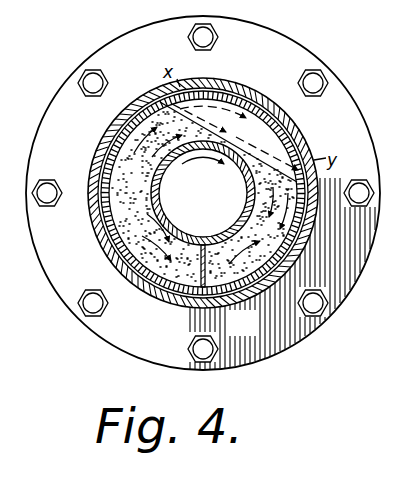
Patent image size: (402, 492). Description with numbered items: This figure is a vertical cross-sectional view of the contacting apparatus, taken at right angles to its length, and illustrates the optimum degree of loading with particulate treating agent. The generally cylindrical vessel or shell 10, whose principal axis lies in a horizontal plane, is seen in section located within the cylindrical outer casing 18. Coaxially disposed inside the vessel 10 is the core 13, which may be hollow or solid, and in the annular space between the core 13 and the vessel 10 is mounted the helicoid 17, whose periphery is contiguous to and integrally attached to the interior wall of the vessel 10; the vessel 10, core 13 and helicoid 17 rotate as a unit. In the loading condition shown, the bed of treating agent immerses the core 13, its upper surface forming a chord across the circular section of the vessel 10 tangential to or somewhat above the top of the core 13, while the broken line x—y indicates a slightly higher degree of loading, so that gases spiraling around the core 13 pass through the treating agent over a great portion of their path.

The vessel or shell 10 is at (90, 172).
The core 13 is at (203, 193).
The helicoid 17 is at (222, 298).
The outer casing 18 is at (97, 149).